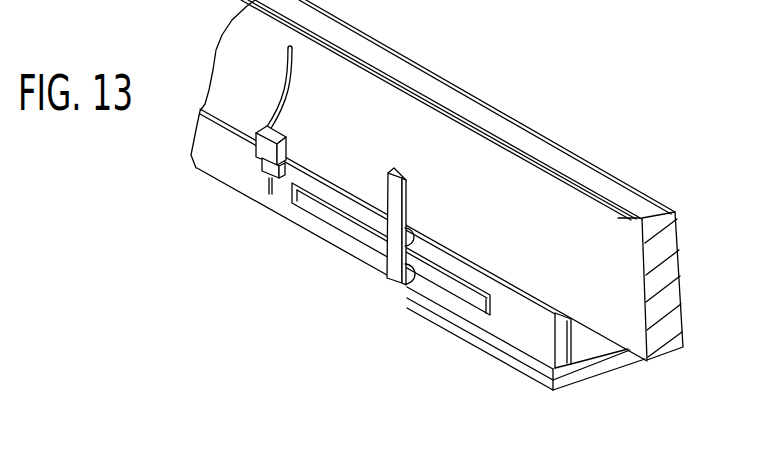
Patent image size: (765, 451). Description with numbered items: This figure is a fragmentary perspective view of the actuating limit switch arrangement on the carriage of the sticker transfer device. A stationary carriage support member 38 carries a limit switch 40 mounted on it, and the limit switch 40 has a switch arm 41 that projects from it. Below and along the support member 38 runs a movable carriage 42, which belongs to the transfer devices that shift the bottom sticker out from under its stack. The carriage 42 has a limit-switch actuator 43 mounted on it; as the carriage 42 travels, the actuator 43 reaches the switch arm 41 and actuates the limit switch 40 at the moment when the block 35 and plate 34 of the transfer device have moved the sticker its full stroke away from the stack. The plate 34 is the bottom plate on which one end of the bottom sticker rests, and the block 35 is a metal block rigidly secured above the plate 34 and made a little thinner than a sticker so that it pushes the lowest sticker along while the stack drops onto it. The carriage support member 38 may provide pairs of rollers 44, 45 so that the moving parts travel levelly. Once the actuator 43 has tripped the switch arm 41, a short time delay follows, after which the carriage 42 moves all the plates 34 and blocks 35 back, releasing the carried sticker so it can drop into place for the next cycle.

The bottom plate 34 is at (447, 327).
The metal block 35 is at (495, 348).
The stationary carriage support member 38 is at (603, 268).
The limit switch 40 is at (285, 152).
The switch arm 41 is at (266, 178).
The movable carriage 42 is at (543, 342).
The limit-switch actuator 43 is at (296, 201).
The roller 44 is at (406, 229).
The roller 45 is at (405, 287).